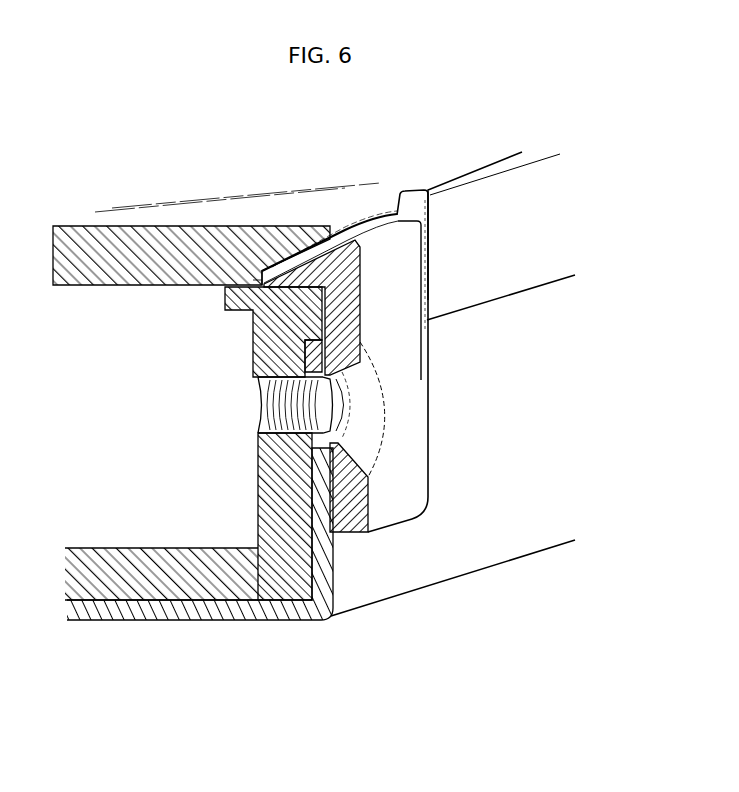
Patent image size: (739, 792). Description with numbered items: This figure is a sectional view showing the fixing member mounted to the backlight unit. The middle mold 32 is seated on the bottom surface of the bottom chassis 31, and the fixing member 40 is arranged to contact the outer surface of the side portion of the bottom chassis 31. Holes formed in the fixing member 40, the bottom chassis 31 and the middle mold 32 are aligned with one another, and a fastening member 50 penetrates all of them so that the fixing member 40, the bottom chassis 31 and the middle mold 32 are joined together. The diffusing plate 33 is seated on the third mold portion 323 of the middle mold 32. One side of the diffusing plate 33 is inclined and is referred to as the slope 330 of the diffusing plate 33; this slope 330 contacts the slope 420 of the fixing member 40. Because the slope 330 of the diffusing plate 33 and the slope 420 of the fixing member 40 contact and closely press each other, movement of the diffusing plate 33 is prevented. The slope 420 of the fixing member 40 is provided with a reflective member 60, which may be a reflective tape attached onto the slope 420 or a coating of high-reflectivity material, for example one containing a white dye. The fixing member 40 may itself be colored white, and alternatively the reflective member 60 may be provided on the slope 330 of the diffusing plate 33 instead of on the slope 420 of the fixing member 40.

The diffusing plate 33 is at (155, 227).
The slope of the diffusing plate 330 is at (253, 280).
The reflective member 60 is at (298, 248).
The third mold portion 323 is at (250, 302).
The slope of the fixing member 420 is at (335, 243).
The fastening member 50 is at (373, 392).
The fixing member 40 is at (417, 450).
The bottom chassis 31 is at (328, 585).
The middle mold 32 is at (150, 567).